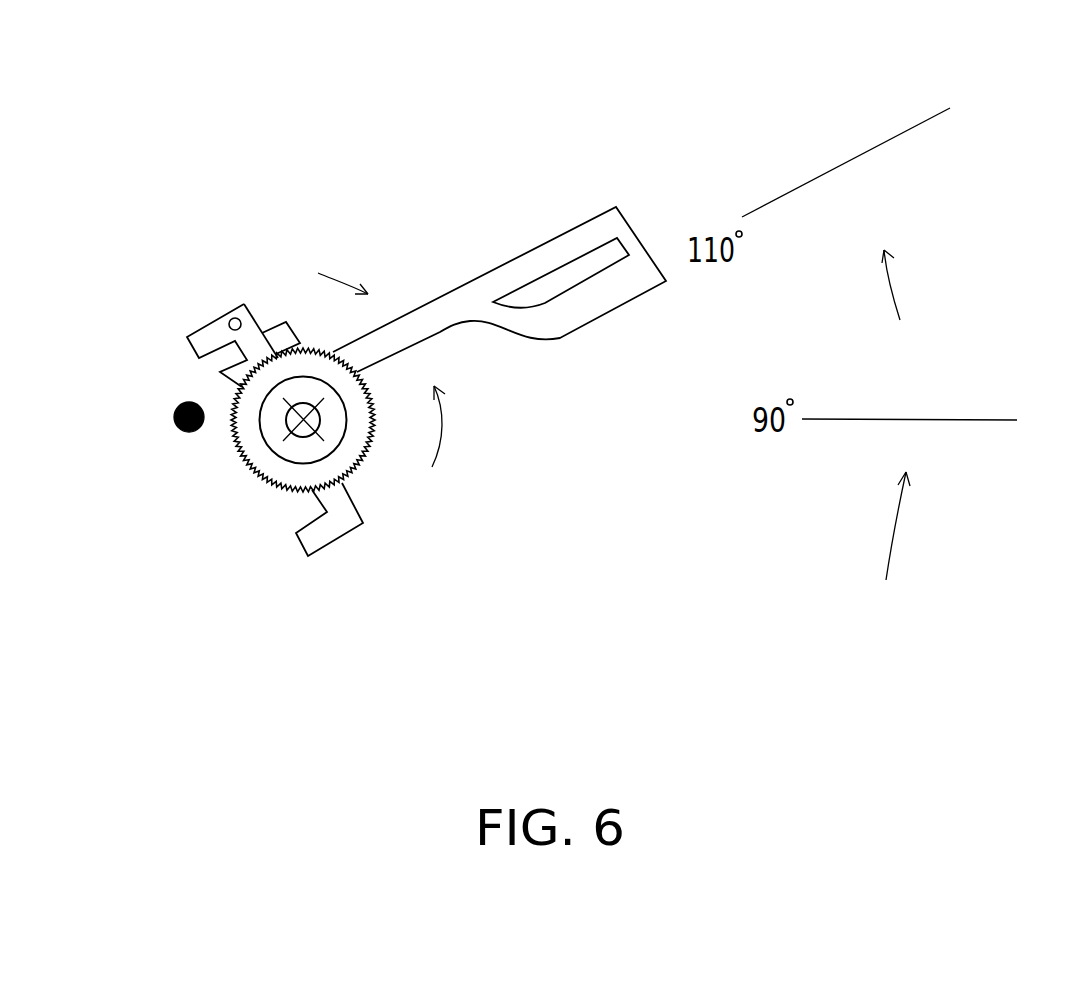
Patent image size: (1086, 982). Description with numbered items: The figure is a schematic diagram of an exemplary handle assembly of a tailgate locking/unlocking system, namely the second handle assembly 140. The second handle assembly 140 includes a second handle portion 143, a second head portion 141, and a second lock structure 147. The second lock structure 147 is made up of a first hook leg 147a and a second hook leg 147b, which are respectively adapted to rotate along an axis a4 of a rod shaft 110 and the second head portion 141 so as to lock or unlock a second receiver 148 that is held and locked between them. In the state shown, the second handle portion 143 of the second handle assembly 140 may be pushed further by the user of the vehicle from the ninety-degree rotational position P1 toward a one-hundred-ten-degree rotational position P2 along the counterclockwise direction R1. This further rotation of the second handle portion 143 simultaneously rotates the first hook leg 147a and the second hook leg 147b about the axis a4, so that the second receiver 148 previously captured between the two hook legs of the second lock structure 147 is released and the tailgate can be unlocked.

The second handle assembly 140 is at (499, 222).
The second handle portion 143 is at (517, 270).
The second head portion 141 is at (250, 441).
The rod shaft 110 is at (290, 449).
The second lock structure 147 is at (261, 403).
The first hook leg 147a is at (210, 338).
The second hook leg 147b is at (338, 525).
The second receiver 148 is at (172, 427).
The axis a4 is at (303, 420).
The 90-degree rotational position P1 is at (940, 420).
The 110-degree rotational position P2 is at (880, 150).
The counterclockwise direction R1 is at (920, 415).